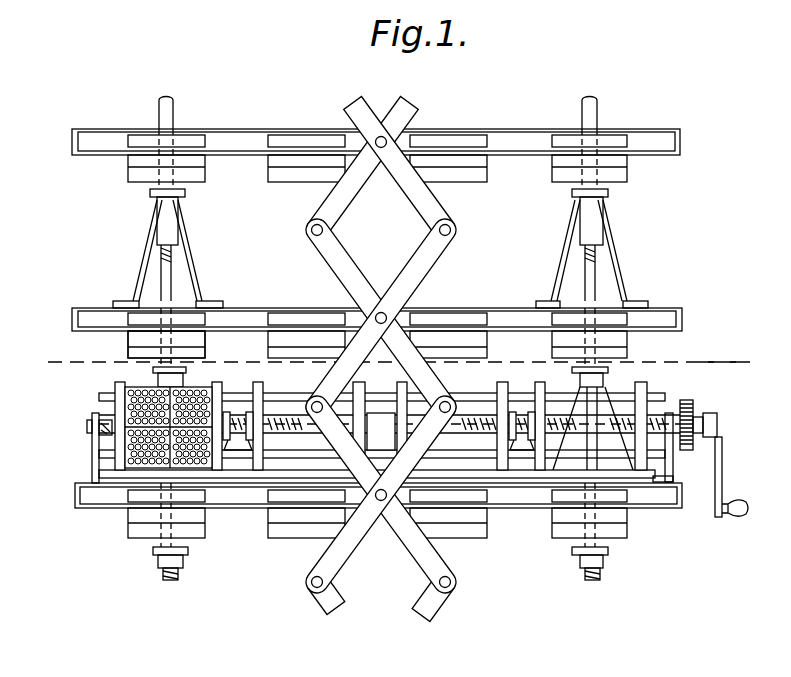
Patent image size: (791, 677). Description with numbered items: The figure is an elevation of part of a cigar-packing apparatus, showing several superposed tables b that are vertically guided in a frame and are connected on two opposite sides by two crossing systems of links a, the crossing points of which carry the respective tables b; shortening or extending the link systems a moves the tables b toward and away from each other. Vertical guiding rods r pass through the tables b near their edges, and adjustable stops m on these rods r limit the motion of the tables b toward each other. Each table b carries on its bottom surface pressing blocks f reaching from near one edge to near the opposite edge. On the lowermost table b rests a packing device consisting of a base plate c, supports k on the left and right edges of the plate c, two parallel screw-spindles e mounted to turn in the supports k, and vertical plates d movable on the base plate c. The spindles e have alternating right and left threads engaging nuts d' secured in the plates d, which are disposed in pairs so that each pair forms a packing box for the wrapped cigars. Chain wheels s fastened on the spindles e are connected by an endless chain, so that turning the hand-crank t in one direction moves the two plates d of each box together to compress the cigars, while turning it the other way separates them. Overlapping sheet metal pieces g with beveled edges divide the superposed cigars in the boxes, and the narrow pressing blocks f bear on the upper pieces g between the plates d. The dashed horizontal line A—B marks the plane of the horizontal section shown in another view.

The systems of links a is at (423, 270).
The superposed tables b is at (658, 146).
The base plate c is at (637, 478).
The vertical plates d is at (415, 413).
The nuts d' is at (379, 408).
The screw-spindles e is at (288, 428).
The pressing blocks f is at (128, 347).
The sheet metal pieces g is at (125, 405).
The supports k is at (92, 446).
The adjustable stops m is at (167, 222).
The vertical guiding rods r is at (380, 254).
The chain wheels s is at (691, 403).
The hand-crank t is at (741, 515).
The section line A—B A is at (381, 368).
The section line A— B is at (734, 360).